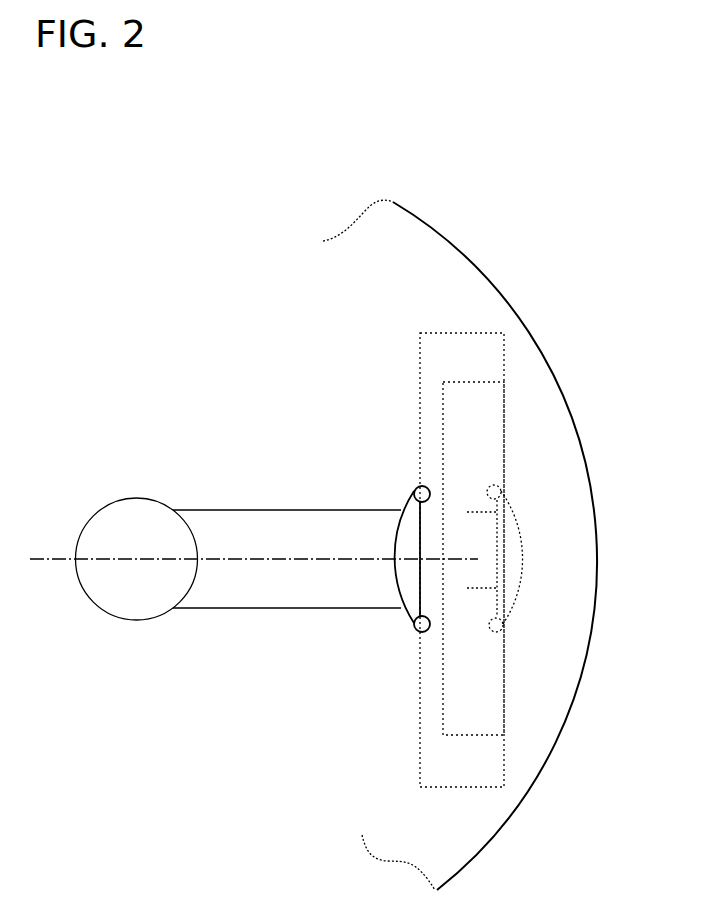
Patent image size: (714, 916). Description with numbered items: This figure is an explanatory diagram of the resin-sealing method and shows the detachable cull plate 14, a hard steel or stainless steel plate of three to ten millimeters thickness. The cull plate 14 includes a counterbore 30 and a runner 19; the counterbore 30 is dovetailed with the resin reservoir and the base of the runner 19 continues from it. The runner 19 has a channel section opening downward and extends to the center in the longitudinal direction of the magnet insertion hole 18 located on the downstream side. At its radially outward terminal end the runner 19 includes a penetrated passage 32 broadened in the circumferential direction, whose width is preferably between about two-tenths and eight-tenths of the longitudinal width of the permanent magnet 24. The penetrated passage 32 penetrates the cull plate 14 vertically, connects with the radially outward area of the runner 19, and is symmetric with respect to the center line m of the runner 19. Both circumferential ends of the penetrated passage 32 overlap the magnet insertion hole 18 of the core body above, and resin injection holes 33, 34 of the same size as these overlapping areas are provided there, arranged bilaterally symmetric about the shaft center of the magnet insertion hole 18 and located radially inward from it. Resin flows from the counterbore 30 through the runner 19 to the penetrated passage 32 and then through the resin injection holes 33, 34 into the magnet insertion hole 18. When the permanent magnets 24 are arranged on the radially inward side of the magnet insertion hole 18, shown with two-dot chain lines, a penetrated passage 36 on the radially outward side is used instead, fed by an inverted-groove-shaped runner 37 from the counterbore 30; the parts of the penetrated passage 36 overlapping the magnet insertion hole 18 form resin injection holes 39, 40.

The cull plate 14 is at (448, 240).
The magnet insertion hole 18 is at (427, 760).
The runner 19 is at (310, 530).
The permanent magnet 24 is at (477, 407).
The counterbore 30 is at (145, 532).
The penetrated passage 32 is at (407, 582).
The resin injection hole 33 is at (420, 493).
The resin injection hole 34 is at (427, 627).
The penetrated passage 36 is at (528, 552).
The inverted-groove-shaped runner 37 is at (467, 609).
The resin injection hole 39 is at (500, 490).
The resin injection hole 40 is at (507, 632).
The center line m is at (235, 562).